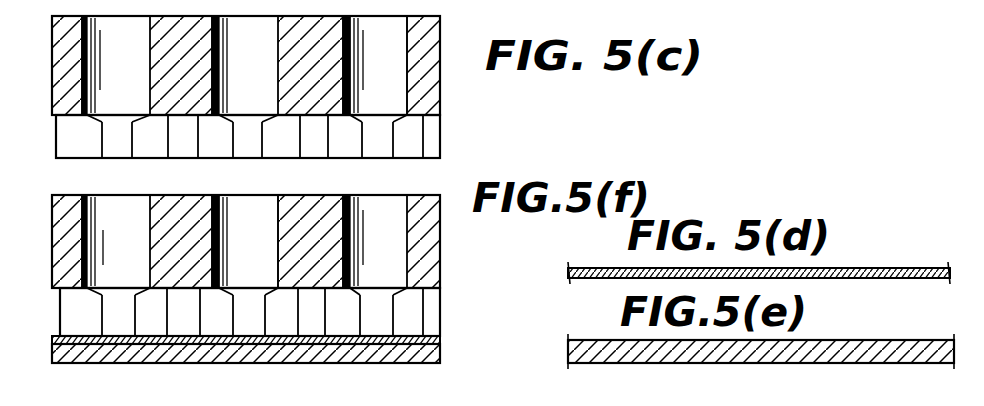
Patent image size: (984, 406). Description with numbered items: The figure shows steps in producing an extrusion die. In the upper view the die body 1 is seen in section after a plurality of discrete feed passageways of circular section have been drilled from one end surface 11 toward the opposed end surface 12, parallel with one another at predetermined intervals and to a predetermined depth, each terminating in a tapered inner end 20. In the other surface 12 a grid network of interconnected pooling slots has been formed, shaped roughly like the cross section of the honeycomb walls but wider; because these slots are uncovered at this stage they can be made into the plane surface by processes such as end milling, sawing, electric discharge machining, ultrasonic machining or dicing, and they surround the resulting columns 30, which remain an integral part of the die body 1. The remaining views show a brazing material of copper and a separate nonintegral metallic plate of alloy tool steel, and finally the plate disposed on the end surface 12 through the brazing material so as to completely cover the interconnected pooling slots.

The die body 1 is at (46, 265).
The end surface 11 is at (56, 20).
The opposed end surface 12 is at (72, 161).
The tapered inner end 20 is at (270, 112).
The columns 30 is at (158, 145).